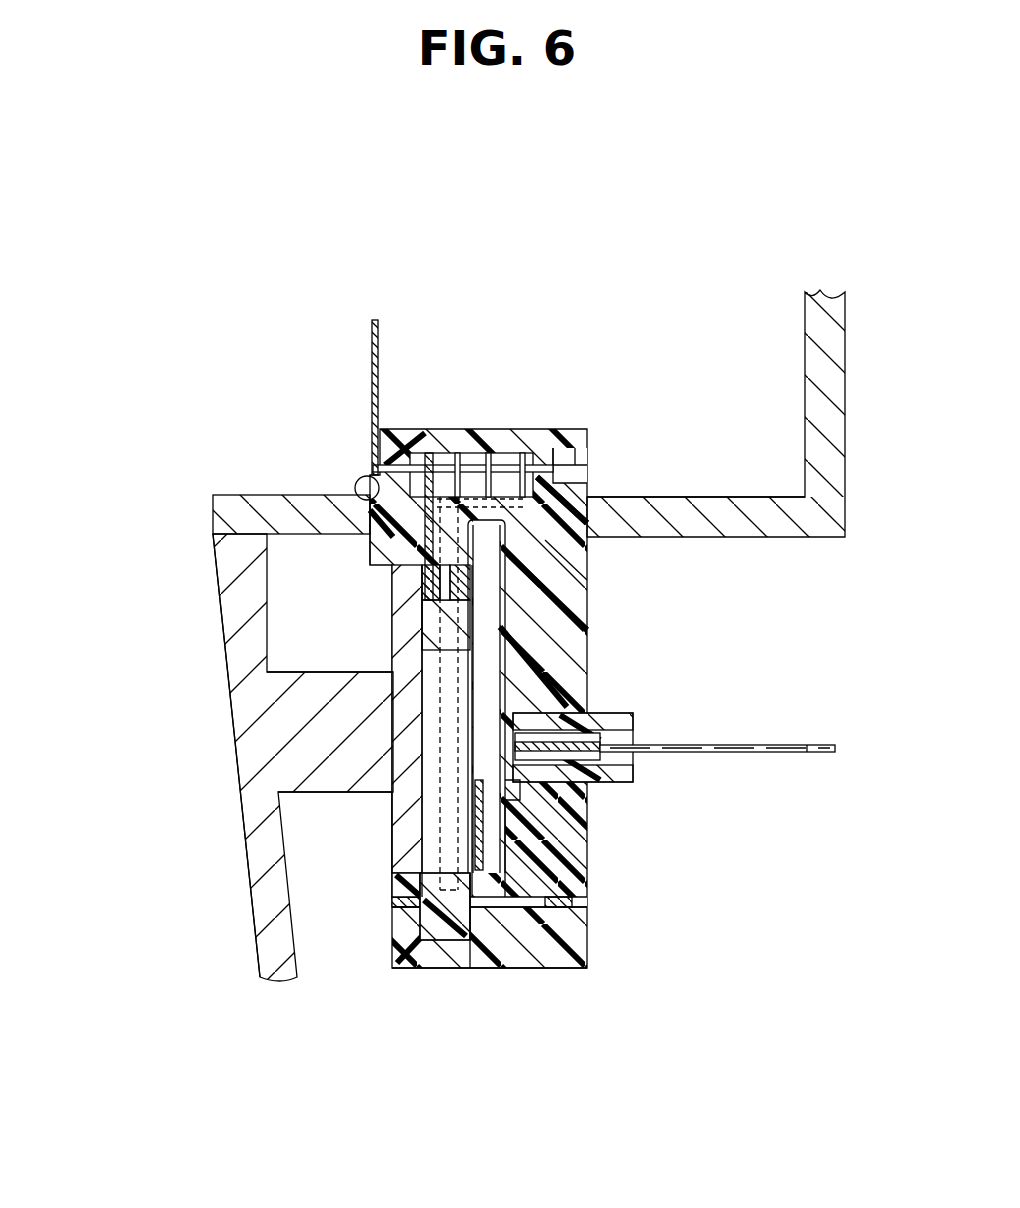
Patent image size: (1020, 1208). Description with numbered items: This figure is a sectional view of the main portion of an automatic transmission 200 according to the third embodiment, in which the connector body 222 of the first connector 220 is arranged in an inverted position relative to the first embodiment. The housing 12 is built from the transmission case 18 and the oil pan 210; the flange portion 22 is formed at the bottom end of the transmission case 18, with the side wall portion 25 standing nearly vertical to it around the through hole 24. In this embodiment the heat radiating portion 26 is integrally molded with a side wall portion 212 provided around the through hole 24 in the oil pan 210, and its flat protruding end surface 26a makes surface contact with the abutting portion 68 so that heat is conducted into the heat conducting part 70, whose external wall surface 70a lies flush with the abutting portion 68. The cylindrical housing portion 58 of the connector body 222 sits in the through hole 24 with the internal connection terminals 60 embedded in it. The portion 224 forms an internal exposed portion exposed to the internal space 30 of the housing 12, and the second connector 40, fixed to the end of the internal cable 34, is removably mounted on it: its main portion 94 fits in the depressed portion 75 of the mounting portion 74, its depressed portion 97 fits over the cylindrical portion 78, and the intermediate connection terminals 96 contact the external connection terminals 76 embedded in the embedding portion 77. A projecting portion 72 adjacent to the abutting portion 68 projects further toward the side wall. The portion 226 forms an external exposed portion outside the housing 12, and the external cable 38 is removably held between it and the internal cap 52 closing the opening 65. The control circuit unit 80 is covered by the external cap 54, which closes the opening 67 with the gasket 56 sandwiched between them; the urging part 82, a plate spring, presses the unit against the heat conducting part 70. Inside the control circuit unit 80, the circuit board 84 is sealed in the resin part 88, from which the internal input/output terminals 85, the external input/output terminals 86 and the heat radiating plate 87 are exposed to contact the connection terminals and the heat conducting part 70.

The automatic transmission 200 is at (150, 268).
The housing 12 is at (216, 726).
The transmission case 18 is at (232, 510).
The oil pan 210 is at (218, 540).
The side wall portion 212 is at (228, 637).
The flange portion 22 is at (776, 498).
The through hole 24 is at (360, 487).
The side wall portion 25 is at (845, 360).
The heat radiating portion 26 is at (340, 775).
The protruding end surface 26a is at (392, 729).
The internal space 30 is at (280, 496).
The internal cable 34 is at (808, 760).
The external cable 38 is at (388, 357).
The second connector 40 is at (640, 768).
The internal cap 52 is at (590, 445).
The external cap 54 is at (590, 965).
The gasket 56 is at (588, 905).
The housing portion 58 is at (588, 585).
The internal connection terminals 60 is at (490, 455).
The opening 65 is at (528, 452).
The opening 67 is at (485, 930).
The abutting portion 68 is at (395, 897).
The heat conducting part 70 is at (400, 822).
The external wall surface 70a is at (400, 866).
The projecting portion 72 is at (382, 540).
The mounting portion 74 is at (614, 846).
The depressed portion 75 is at (585, 800).
The external connection terminals 76 is at (500, 533).
The embedding portion 77 is at (585, 835).
The cylindrical portion 78 is at (585, 815).
The control circuit unit 80 is at (455, 942).
The urging part 82 is at (540, 920).
The circuit board 84 is at (430, 653).
The internal input/output terminals 85 is at (430, 582).
The external input/output terminals 86 is at (580, 650).
The heat radiating plate 87 is at (435, 628).
The resin part 88 is at (440, 610).
The main portion 94 is at (560, 710).
The intermediate connection terminals 96 is at (600, 741).
The depressed portion 97 is at (560, 700).
The first connector 220 is at (590, 428).
The connector body 222 is at (638, 565).
The internal exposed portion 224 is at (585, 606).
The external exposed portion 226 is at (590, 522).